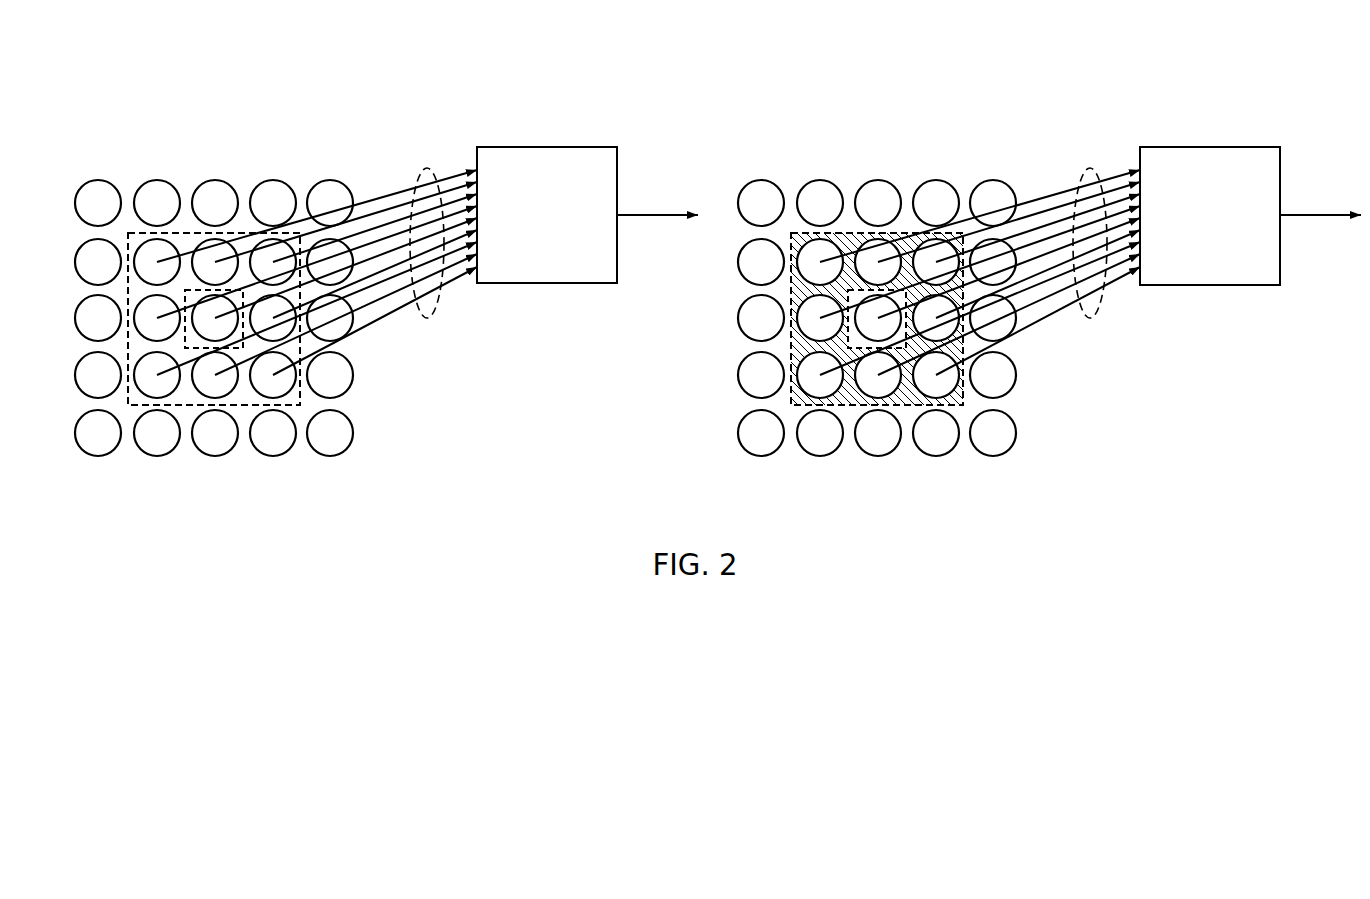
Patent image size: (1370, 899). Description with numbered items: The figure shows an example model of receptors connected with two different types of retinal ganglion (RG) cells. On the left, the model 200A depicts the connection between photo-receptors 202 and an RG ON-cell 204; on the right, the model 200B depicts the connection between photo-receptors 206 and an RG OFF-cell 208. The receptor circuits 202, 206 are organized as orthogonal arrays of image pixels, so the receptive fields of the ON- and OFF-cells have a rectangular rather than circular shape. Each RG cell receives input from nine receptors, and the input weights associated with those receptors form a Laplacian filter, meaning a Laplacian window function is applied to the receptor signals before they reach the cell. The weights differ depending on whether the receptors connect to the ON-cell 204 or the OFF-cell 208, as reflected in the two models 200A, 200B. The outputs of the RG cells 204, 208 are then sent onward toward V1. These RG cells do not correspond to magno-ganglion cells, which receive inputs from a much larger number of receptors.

The model of connection between photo-receptors and RG ON-cell 200A is at (401, 104).
The model of connection between photo-receptors and RG OFF-cell 200B is at (1049, 251).
The photo-receptors 202 is at (218, 108).
The RG ON-cell 204 is at (563, 147).
The photo-receptors 206 is at (877, 267).
The RG OFF-cell 208 is at (1250, 202).